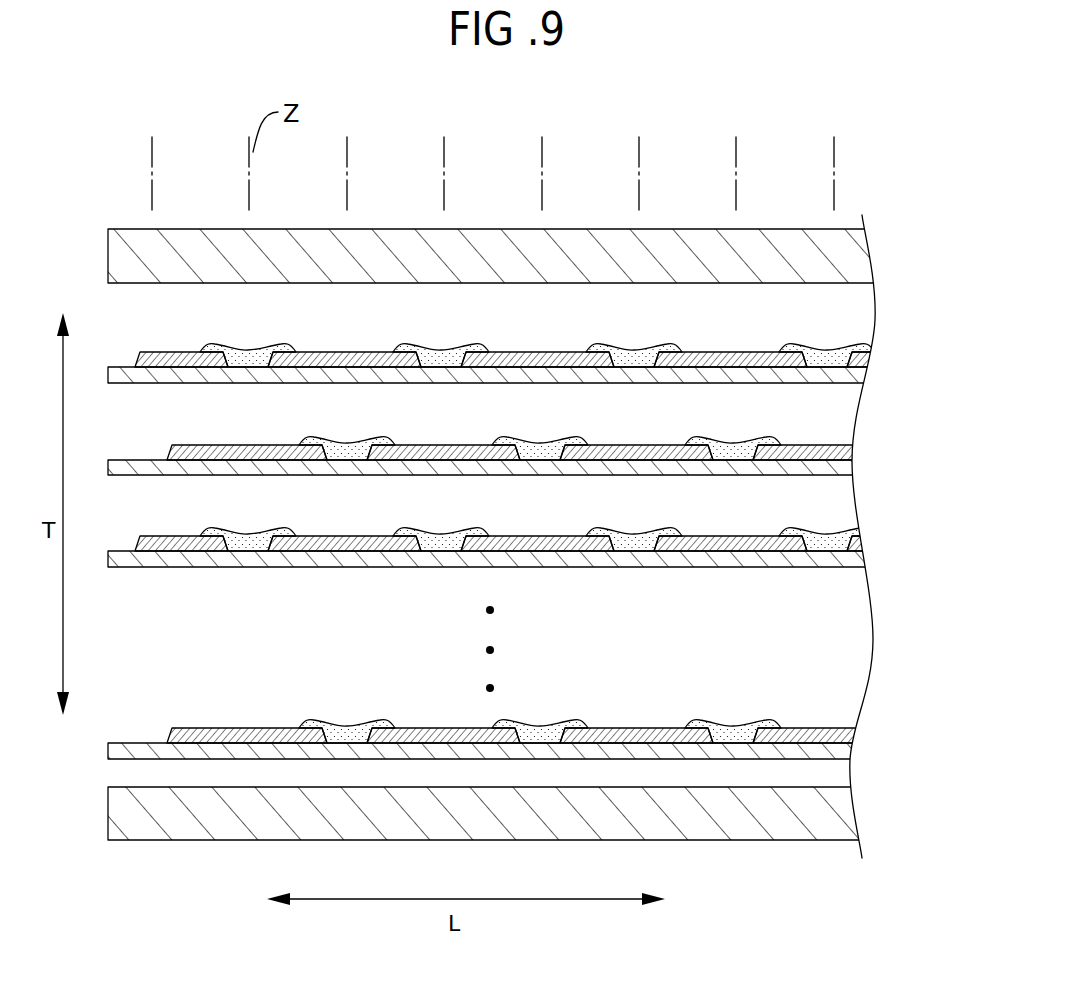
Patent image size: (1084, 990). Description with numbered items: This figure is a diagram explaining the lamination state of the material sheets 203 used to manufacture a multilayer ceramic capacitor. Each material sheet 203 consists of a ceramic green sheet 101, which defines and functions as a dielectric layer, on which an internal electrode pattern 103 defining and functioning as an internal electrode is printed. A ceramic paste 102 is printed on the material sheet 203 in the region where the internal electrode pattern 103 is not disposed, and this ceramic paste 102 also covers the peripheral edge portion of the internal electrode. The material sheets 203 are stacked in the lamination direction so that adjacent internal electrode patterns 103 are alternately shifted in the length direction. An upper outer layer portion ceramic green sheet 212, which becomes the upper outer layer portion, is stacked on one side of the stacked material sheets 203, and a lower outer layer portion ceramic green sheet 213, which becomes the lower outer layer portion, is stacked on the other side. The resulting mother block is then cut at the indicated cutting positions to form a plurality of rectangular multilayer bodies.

The ceramic green sheet 101 is at (860, 371).
The ceramic paste 102 is at (637, 352).
The internal electrode pattern 103 is at (723, 352).
The material sheet 203 is at (534, 534).
The upper outer layer portion ceramic green sheet 212 is at (758, 247).
The lower outer layer portion ceramic green sheet 213 is at (758, 830).